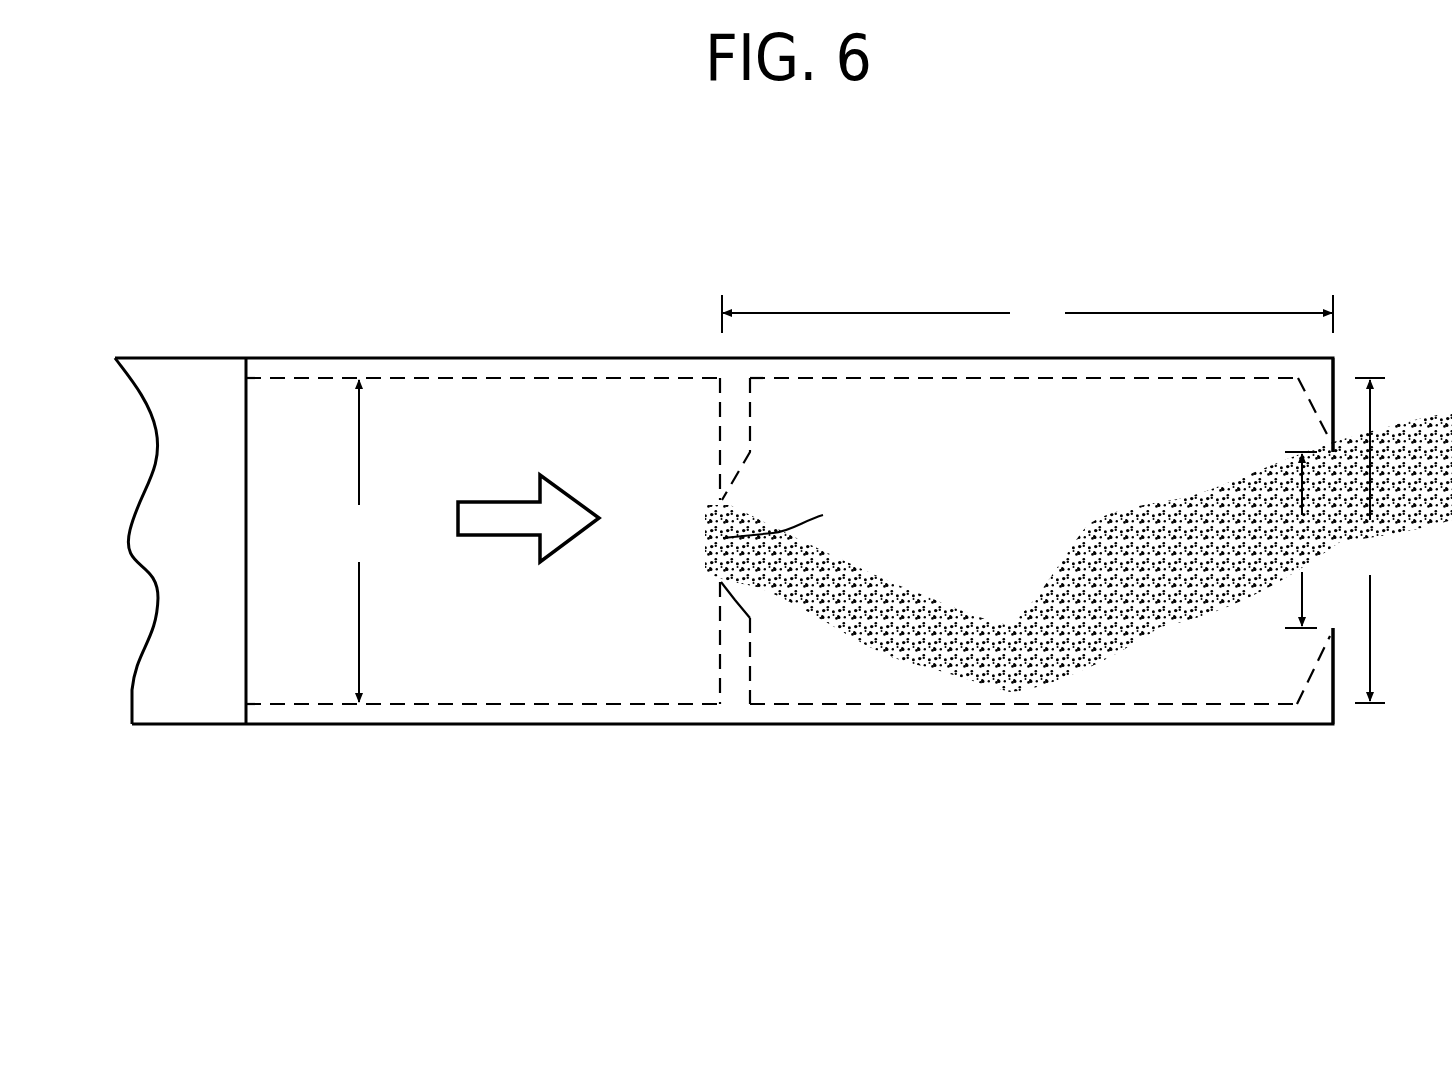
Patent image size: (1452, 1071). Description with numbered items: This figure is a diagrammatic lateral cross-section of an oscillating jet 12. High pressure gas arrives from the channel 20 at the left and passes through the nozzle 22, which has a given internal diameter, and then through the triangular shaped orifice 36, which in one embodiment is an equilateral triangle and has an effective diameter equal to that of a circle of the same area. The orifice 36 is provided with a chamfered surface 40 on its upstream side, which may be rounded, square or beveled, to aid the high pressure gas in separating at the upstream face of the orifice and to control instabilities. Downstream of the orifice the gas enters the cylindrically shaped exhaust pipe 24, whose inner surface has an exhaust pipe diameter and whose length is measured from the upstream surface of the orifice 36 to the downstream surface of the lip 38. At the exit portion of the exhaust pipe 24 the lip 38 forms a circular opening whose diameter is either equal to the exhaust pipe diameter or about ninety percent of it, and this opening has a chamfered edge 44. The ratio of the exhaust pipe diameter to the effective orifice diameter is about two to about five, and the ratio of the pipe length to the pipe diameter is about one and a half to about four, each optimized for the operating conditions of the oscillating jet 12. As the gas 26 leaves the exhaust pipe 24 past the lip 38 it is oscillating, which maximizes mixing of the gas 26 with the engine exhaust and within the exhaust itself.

The oscillating jet 12 is at (818, 247).
The channel 20 is at (183, 358).
The nozzle 22 is at (432, 627).
The exhaust pipe 24 is at (1005, 565).
The oscillating gas 26 is at (912, 662).
The triangular shaped orifice 36 is at (736, 500).
The lip 38 is at (1335, 376).
The chamfered surface 40 is at (735, 600).
The chamfered edge 44 is at (1308, 676).